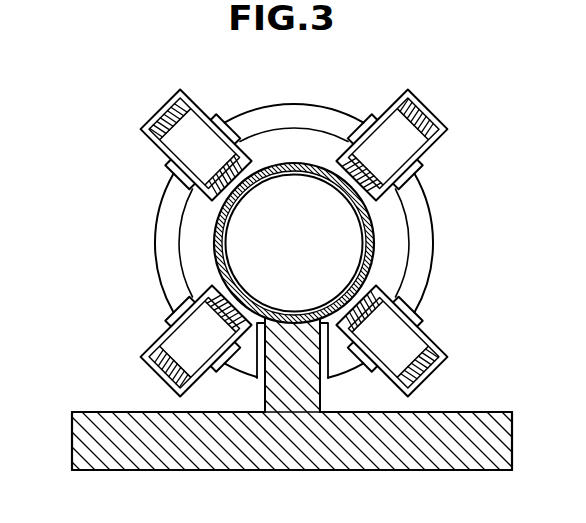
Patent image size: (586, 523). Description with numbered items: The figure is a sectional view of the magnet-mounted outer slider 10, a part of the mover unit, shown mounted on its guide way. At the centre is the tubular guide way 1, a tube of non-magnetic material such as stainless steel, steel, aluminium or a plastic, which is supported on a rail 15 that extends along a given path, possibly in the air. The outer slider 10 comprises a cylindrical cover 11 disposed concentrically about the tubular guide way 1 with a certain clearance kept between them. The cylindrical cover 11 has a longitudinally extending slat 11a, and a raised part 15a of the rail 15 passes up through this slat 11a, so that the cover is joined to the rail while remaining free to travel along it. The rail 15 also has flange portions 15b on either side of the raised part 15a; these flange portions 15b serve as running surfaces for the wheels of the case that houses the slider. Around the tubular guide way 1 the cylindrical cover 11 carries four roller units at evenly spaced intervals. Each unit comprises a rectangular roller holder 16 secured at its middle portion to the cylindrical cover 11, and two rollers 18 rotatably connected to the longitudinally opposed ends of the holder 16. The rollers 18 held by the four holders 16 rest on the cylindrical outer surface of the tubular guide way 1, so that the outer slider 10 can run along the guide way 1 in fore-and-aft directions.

The tubular guide way 1 is at (218, 241).
The outer slider 10 is at (453, 242).
The cylindrical cover 11 is at (290, 118).
The longitudinally extending slat 11a is at (316, 374).
The rail 15 is at (220, 448).
The raised part 15a is at (287, 372).
The flange portions 15b is at (92, 424).
The rectangular roller holder 16 is at (163, 108).
The rollers 18 is at (174, 130).